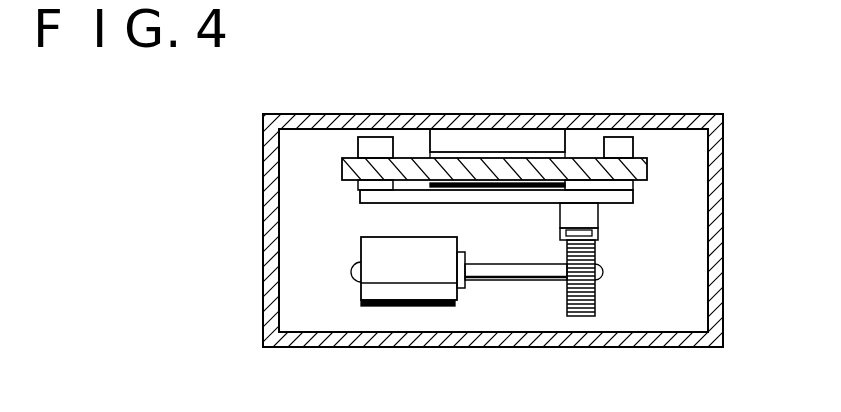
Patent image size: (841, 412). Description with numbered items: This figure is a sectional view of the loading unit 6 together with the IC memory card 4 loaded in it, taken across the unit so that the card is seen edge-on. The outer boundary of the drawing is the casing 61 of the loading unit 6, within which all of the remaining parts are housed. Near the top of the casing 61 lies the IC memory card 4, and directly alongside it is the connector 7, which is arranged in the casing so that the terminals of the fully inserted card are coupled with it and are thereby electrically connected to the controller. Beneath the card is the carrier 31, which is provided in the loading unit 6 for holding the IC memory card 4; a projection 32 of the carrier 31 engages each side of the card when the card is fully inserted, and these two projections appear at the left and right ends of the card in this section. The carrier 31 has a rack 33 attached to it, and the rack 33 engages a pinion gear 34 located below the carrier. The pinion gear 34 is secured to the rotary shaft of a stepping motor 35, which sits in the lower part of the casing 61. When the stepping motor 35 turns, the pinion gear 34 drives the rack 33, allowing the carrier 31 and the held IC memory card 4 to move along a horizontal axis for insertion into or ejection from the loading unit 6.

The IC memory card 4 is at (482, 160).
The loading unit 6 is at (318, 241).
The connector 7 is at (547, 150).
The carrier 31 is at (360, 199).
The projection 32 is at (373, 150).
The rack 33 is at (600, 228).
The pinion gear 34 is at (580, 300).
The stepping motor 35 is at (400, 290).
The casing 61 is at (713, 181).